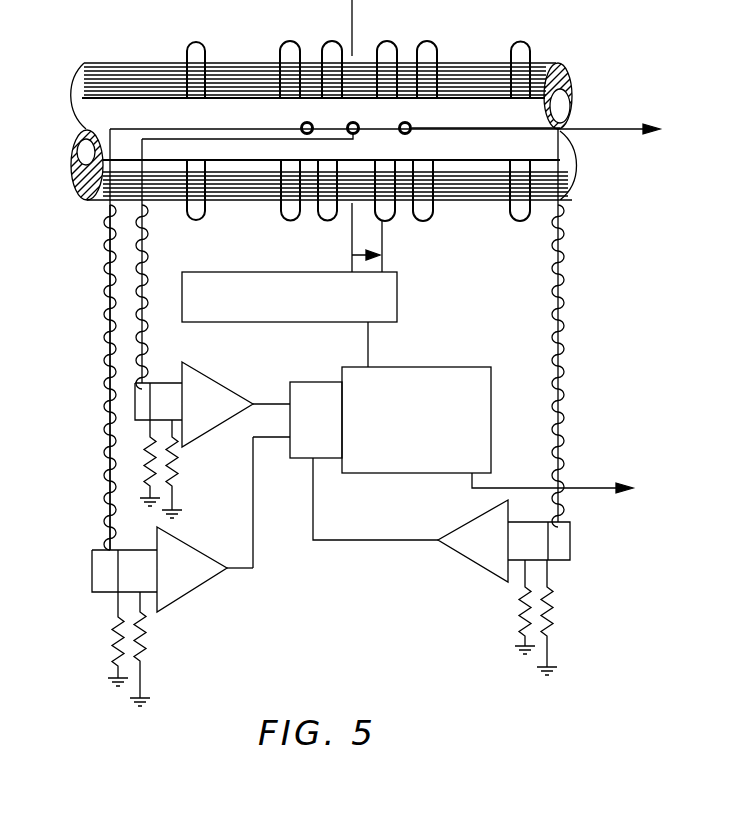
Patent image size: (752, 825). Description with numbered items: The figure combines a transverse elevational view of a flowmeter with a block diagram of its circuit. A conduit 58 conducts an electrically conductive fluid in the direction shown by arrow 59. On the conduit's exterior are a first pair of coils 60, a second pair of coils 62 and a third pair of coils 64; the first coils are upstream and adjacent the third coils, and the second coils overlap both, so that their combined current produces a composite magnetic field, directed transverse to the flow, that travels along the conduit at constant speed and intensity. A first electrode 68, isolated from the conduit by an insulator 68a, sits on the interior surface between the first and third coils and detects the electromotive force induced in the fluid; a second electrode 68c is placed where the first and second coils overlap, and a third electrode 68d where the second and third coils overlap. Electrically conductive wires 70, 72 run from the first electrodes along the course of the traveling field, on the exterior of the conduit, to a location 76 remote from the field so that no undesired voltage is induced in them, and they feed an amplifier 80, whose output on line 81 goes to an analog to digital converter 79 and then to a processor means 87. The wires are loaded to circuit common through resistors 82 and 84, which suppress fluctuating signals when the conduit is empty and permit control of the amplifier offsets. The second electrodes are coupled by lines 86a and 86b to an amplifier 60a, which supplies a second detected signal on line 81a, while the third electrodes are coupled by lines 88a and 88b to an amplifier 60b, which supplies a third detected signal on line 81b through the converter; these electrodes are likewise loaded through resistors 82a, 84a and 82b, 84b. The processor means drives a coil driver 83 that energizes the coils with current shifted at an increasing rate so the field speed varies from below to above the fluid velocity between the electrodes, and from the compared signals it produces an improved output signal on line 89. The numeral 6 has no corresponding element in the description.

The coil excitation current arrow 6 is at (380, 237).
The conduit 58 is at (539, 62).
The arrow 59 is at (596, 128).
The first pair of coils 60 is at (197, 42).
The second pair of coils 62 is at (294, 42).
The third pair of coils 64 is at (520, 42).
The electrode 68 is at (350, 122).
The insulator 68a is at (358, 132).
The second electrode 68c is at (302, 124).
The third electrode 68d is at (410, 124).
The wire 70 is at (190, 131).
The wire 72 is at (150, 232).
The location 76 is at (140, 131).
The analog to digital converter 79 is at (332, 382).
The amplifier 80 is at (208, 381).
The line 81 is at (268, 402).
The line 81a is at (256, 549).
The line 81b is at (333, 542).
The resistor 82 is at (143, 470).
The resistor 82a is at (112, 633).
The resistor 82b is at (557, 607).
The coil driver 83 is at (398, 285).
The resistor 84 is at (178, 468).
The resistor 84a is at (150, 638).
The resistor 84b is at (518, 612).
The line 86a is at (104, 312).
The line 86b is at (103, 342).
The processor means 87 is at (416, 367).
The line 88a is at (561, 292).
The line 88b is at (566, 353).
The line 89 is at (571, 488).
The amplifier 60a is at (192, 595).
The amplifier 60b is at (477, 514).